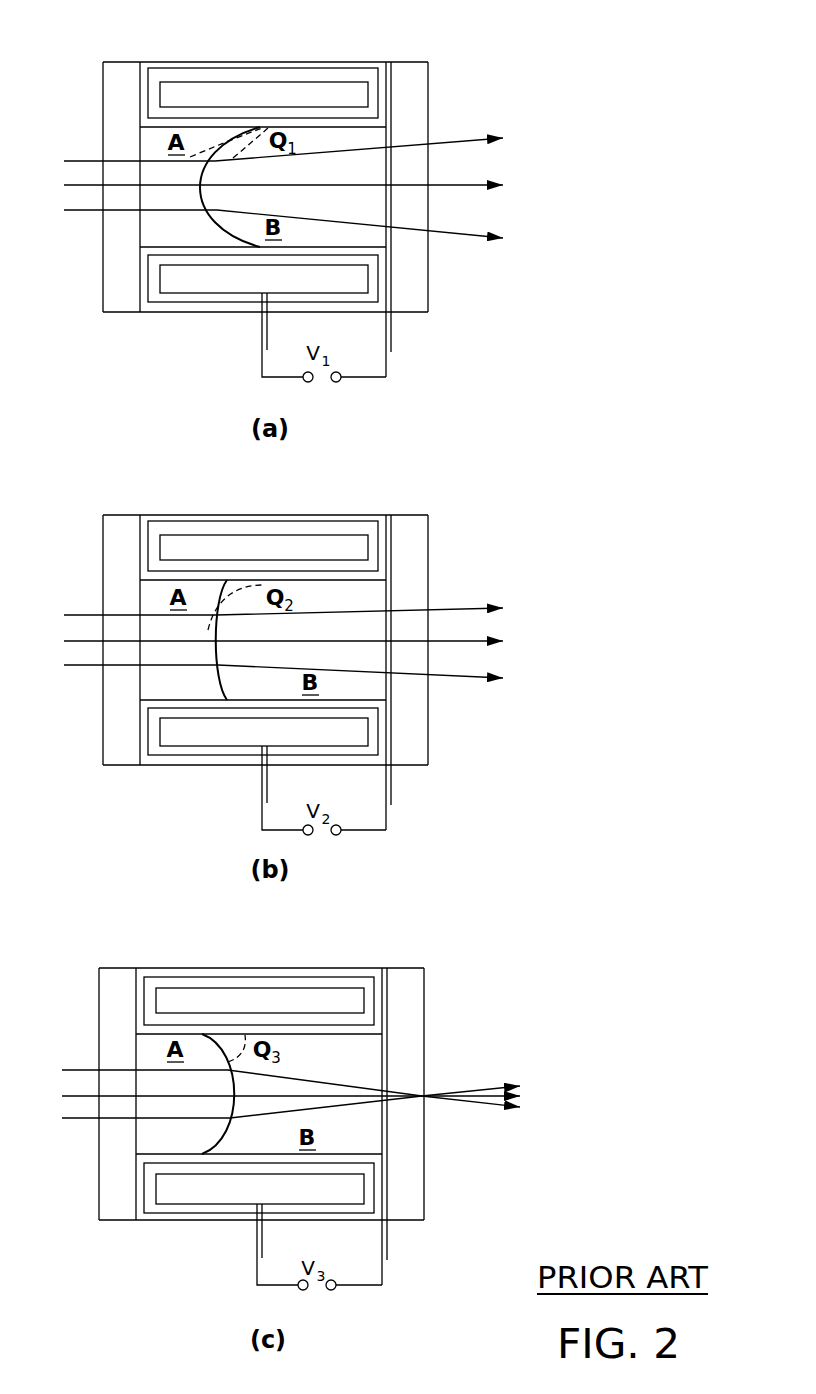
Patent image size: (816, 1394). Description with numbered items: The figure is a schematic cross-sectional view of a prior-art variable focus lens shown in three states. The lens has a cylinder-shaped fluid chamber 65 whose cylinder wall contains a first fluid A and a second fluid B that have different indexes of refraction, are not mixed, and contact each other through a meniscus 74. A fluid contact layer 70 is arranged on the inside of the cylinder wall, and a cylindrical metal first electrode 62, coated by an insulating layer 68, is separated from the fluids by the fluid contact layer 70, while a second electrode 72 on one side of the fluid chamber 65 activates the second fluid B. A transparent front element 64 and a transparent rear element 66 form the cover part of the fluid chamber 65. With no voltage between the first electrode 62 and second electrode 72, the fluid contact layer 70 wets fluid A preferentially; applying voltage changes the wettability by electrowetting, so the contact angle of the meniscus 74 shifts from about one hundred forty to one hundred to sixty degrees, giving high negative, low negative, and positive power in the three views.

The first electrode 62 is at (325, 90).
The transparent front element 64 is at (122, 78).
The fluid chamber 65 is at (360, 137).
The transparent rear element 66 is at (407, 80).
The insulating layer 68 is at (192, 110).
The fluid contact layer 70 is at (237, 125).
The second electrode 72 is at (390, 240).
The meniscus 74 is at (225, 228).